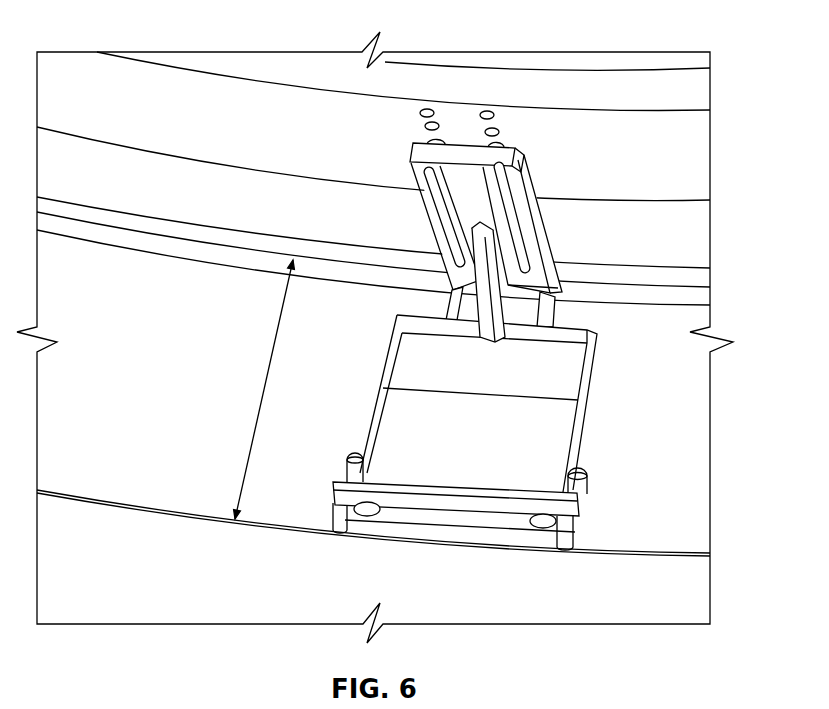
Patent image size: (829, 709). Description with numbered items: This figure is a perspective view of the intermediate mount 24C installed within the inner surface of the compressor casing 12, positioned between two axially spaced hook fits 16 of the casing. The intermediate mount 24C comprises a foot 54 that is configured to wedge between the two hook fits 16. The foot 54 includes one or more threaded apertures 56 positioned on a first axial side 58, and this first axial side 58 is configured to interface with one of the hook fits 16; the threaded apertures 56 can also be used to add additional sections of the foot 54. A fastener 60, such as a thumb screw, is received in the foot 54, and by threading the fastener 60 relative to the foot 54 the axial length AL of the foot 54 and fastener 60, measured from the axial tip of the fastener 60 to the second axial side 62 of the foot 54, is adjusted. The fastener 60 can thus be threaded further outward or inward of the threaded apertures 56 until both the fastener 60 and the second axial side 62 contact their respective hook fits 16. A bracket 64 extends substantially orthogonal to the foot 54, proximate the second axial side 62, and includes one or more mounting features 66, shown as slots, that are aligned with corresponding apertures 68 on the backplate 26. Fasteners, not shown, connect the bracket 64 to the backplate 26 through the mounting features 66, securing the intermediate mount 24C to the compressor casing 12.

The compressor casing 12 is at (144, 558).
The hook fits 16 is at (150, 236).
The intermediate mount 24C is at (526, 316).
The backplate 26 is at (690, 157).
The foot 54 is at (548, 435).
The threaded apertures 56 is at (367, 521).
The first axial side 58 is at (458, 525).
The fastener 60 is at (348, 466).
The second axial side 62 is at (567, 328).
The bracket 64 is at (469, 158).
The mounting features 66 is at (447, 205).
The apertures 68 is at (426, 114).
The axial length AL is at (263, 388).